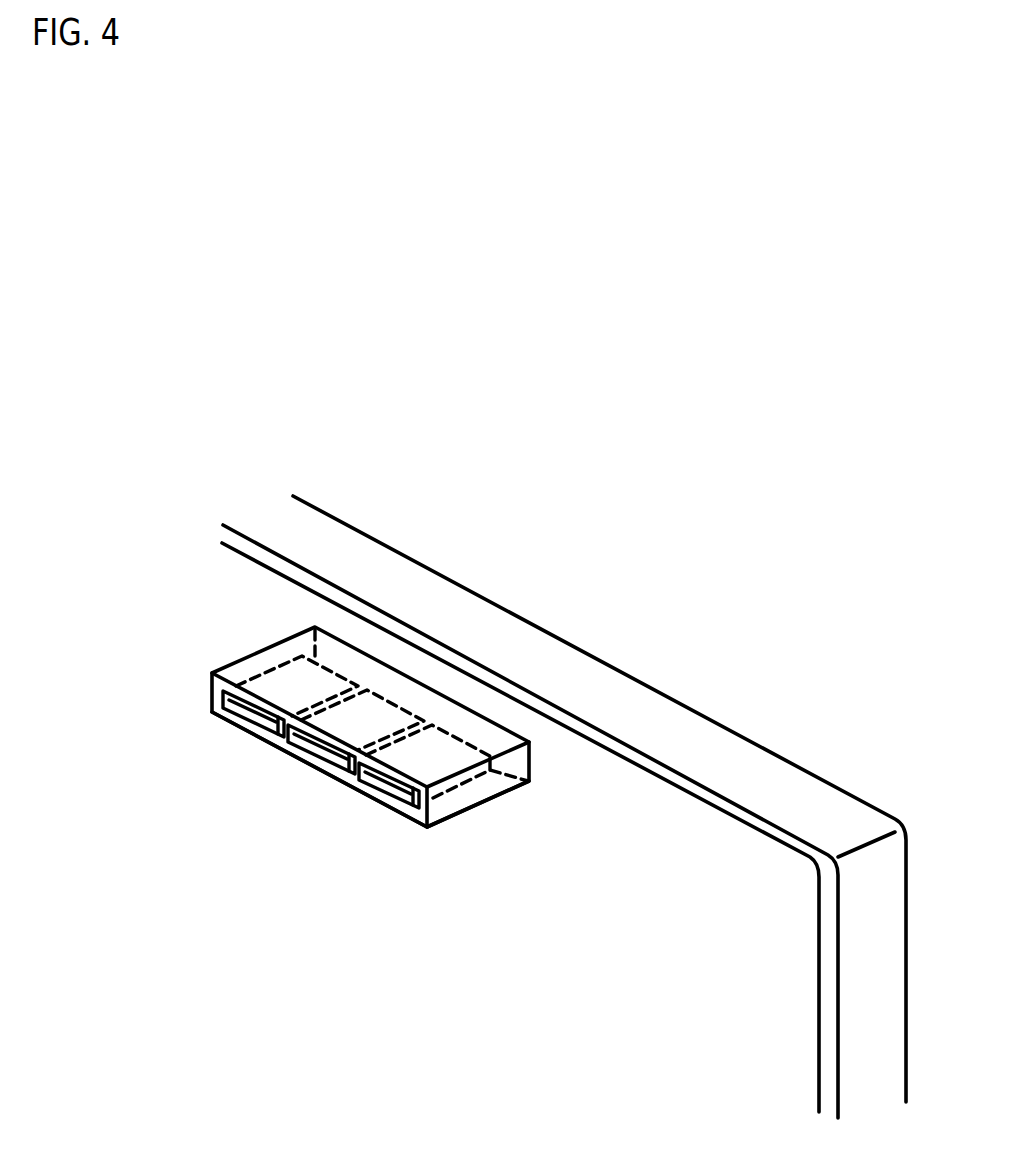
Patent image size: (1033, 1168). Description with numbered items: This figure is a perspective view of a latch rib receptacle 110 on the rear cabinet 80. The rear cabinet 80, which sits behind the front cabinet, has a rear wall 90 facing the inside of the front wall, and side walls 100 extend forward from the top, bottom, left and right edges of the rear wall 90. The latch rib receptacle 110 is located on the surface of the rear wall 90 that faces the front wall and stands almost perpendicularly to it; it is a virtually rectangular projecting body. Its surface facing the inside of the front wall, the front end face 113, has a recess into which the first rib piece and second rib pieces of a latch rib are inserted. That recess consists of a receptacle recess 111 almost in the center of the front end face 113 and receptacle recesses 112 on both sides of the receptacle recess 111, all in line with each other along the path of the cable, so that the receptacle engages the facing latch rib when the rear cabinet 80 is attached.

The rear cabinet 80 is at (408, 557).
The rear wall 90 is at (708, 847).
The side walls 100 is at (507, 630).
The latch rib receptacle 110 is at (300, 760).
The receptacle recess 111 is at (335, 760).
The receptacle recesses 112 is at (253, 715).
The front end face 113 is at (408, 828).